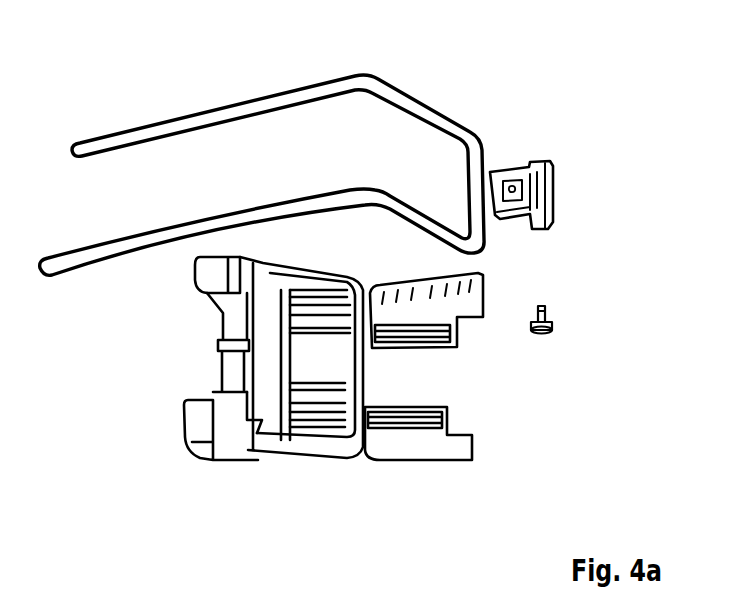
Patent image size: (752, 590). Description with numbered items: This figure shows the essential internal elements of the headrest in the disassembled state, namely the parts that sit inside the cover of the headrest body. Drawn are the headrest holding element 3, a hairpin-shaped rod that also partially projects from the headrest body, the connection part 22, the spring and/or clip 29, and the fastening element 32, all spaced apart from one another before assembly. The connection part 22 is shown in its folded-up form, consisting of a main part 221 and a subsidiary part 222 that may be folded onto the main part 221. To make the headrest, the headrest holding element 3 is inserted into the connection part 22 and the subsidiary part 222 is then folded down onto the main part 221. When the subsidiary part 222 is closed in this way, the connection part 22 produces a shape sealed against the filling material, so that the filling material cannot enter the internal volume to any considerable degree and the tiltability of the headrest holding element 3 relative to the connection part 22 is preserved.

The headrest holding element 3 is at (304, 93).
The connection part 22 is at (202, 366).
The spring and/or clip 29 is at (546, 183).
The fastening element 32 is at (553, 312).
The main part 221 is at (245, 430).
The subsidiary part 222 is at (414, 447).